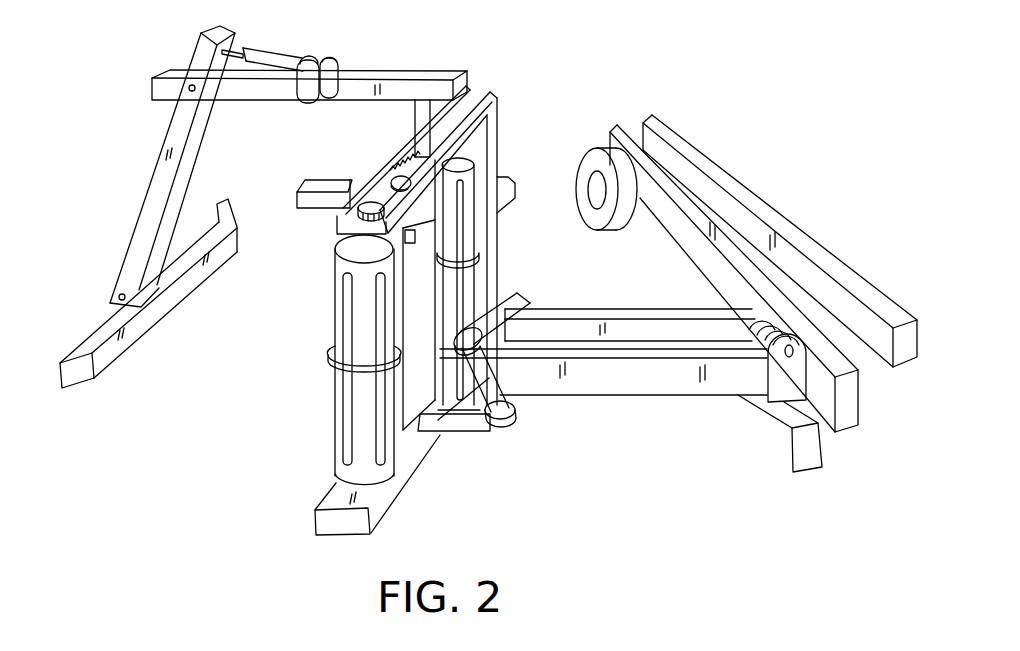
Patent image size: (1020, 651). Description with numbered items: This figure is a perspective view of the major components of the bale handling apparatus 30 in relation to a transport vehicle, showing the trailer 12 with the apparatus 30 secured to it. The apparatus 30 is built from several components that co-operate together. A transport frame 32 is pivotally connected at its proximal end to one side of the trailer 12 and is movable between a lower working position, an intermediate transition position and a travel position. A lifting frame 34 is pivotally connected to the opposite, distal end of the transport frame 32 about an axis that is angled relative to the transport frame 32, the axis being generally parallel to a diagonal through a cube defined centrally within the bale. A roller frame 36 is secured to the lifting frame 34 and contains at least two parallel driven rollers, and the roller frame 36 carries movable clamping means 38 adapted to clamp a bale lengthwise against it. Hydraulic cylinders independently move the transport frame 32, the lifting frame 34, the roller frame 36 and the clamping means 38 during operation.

The trailer 12 is at (742, 168).
The apparatus 30 is at (283, 491).
The transport frame 32 is at (619, 404).
The lifting frame 34 is at (467, 452).
The roller frame 36 is at (335, 330).
The clamping means 38 is at (374, 57).